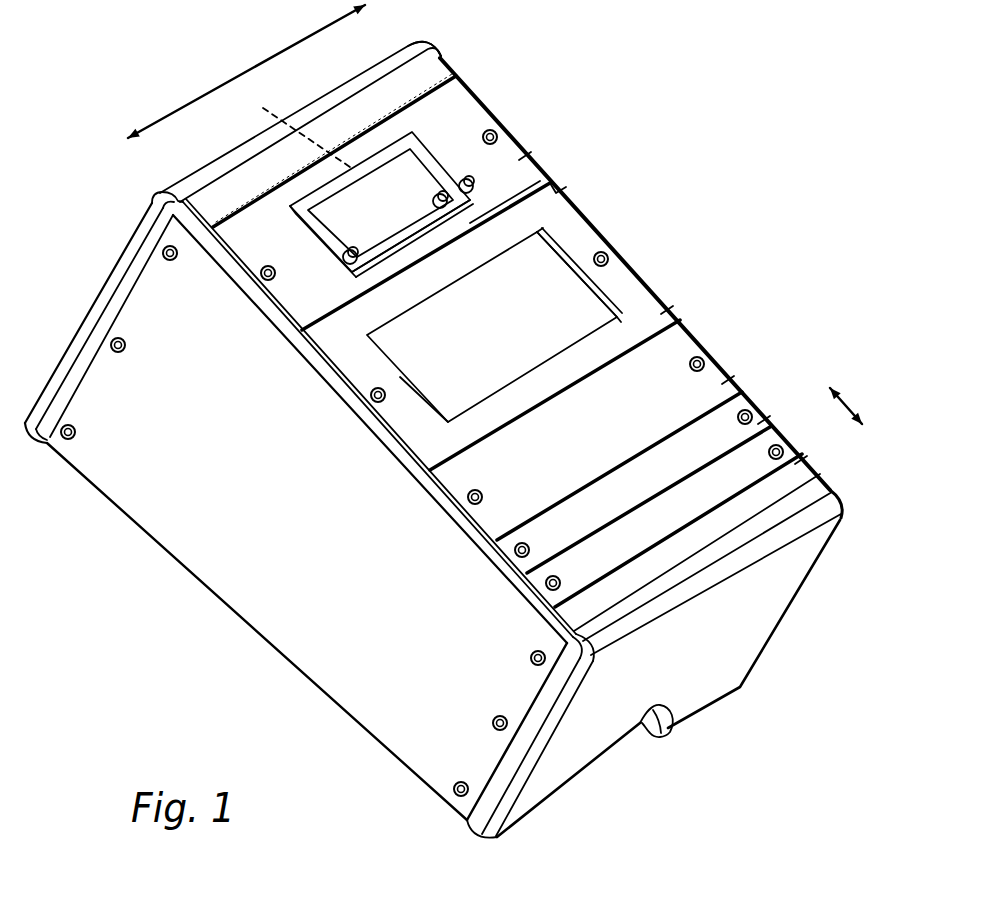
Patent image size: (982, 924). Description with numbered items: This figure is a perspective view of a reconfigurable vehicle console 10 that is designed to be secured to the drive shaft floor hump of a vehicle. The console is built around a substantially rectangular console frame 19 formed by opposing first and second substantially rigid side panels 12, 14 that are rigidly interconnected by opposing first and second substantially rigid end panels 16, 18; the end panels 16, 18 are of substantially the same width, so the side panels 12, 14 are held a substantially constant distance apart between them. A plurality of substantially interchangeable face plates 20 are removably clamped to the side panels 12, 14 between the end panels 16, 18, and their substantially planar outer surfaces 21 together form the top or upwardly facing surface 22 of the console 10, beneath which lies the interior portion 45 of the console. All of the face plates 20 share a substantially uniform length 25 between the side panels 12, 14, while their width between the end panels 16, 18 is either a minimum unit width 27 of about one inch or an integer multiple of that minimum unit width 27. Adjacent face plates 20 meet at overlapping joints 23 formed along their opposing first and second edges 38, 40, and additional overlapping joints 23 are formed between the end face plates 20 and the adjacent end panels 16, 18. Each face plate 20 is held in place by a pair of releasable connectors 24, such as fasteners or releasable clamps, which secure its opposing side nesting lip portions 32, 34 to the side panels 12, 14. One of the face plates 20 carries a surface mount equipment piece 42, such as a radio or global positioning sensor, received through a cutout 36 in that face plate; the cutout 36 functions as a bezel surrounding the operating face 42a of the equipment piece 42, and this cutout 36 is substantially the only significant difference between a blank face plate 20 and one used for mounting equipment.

The reconfigurable vehicle console 10 is at (103, 98).
The first side panel 12 is at (222, 583).
The second side panel 14 is at (477, 368).
The first end panel 16 is at (597, 743).
The second end panel 18 is at (97, 297).
The console frame 19 is at (445, 62).
The face plate 20 is at (479, 100).
The outer surface 21 is at (440, 142).
The upwardly facing surface 22 is at (733, 214).
The overlapping joint 23 is at (380, 69).
The releasable connector 24 is at (498, 133).
The uniform length 25 is at (267, 58).
The minimum unit width 27 is at (845, 406).
The side nesting lip portion 32 is at (237, 265).
The side nesting lip portion 34 is at (525, 156).
The cutout 36 is at (673, 269).
The first edge 38 is at (383, 117).
The second edge 40 is at (520, 206).
The equipment piece 42 is at (323, 193).
The operating face 42a is at (362, 202).
The interior portion 45 is at (523, 262).